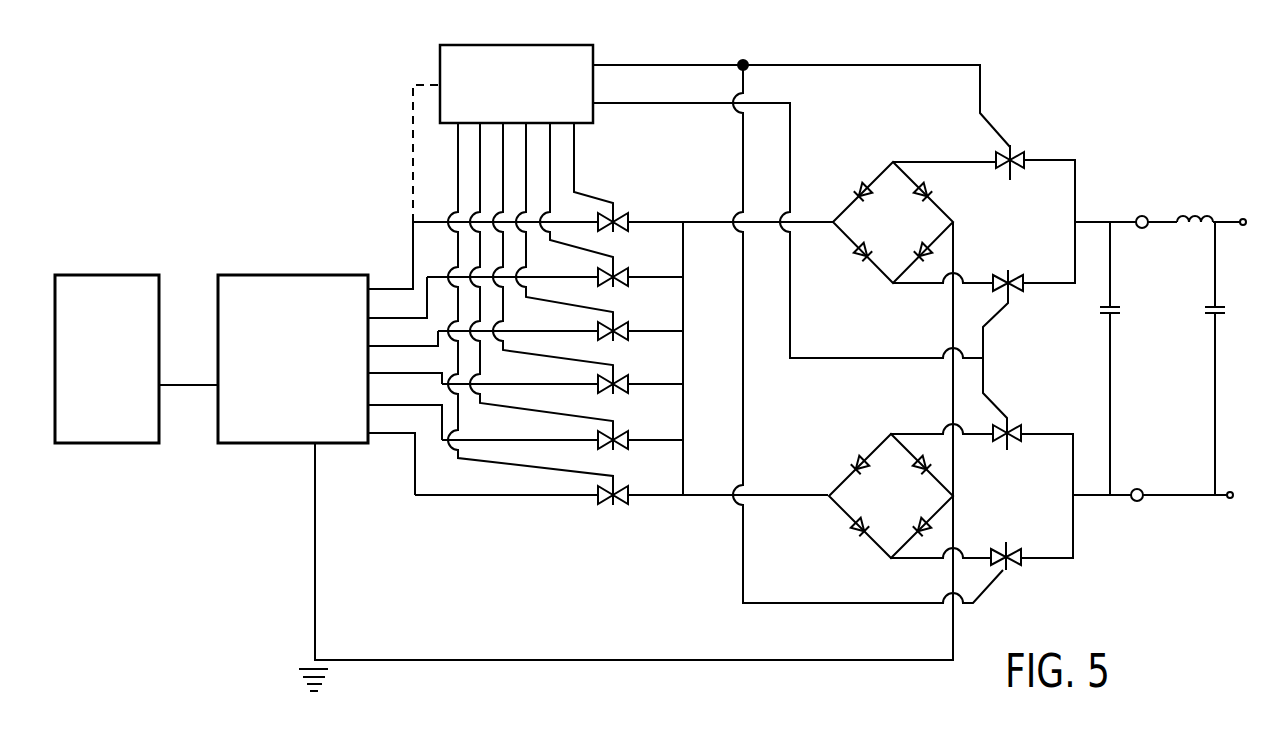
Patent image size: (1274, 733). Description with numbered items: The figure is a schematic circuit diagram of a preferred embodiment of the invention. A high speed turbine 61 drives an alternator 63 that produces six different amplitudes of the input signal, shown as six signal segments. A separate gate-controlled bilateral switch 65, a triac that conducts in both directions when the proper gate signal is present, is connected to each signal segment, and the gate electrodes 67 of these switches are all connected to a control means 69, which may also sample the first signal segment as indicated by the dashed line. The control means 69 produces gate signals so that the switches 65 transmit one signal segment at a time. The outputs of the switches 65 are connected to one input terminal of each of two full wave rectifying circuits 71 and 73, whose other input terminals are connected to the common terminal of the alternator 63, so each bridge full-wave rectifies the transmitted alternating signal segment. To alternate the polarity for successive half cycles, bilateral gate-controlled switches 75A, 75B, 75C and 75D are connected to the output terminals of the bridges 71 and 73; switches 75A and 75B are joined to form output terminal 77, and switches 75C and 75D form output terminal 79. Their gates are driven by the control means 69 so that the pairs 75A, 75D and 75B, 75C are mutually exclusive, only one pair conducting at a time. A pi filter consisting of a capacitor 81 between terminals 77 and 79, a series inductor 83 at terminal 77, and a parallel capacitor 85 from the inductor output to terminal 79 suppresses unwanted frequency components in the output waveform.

The high speed turbine 61 is at (107, 275).
The alternator 63 is at (290, 275).
The gate-controlled bilateral switch 65 is at (627, 214).
The gate electrode 67 is at (613, 206).
The control means 69 is at (525, 45).
The full wave rectifying circuit 71 is at (898, 233).
The full wave rectifying circuit 73 is at (893, 503).
The bilateral gate-controlled switch 75A is at (1014, 152).
The bilateral gate-controlled switch 75B is at (1014, 292).
The bilateral gate-controlled switch 75C is at (1014, 426).
The bilateral gate-controlled switch 75D is at (1010, 550).
The output terminal 77 is at (1140, 215).
The output terminal 79 is at (1139, 489).
The capacitor 81 is at (1122, 311).
The series inductor 83 is at (1181, 217).
The parallel capacitor 85 is at (1227, 311).